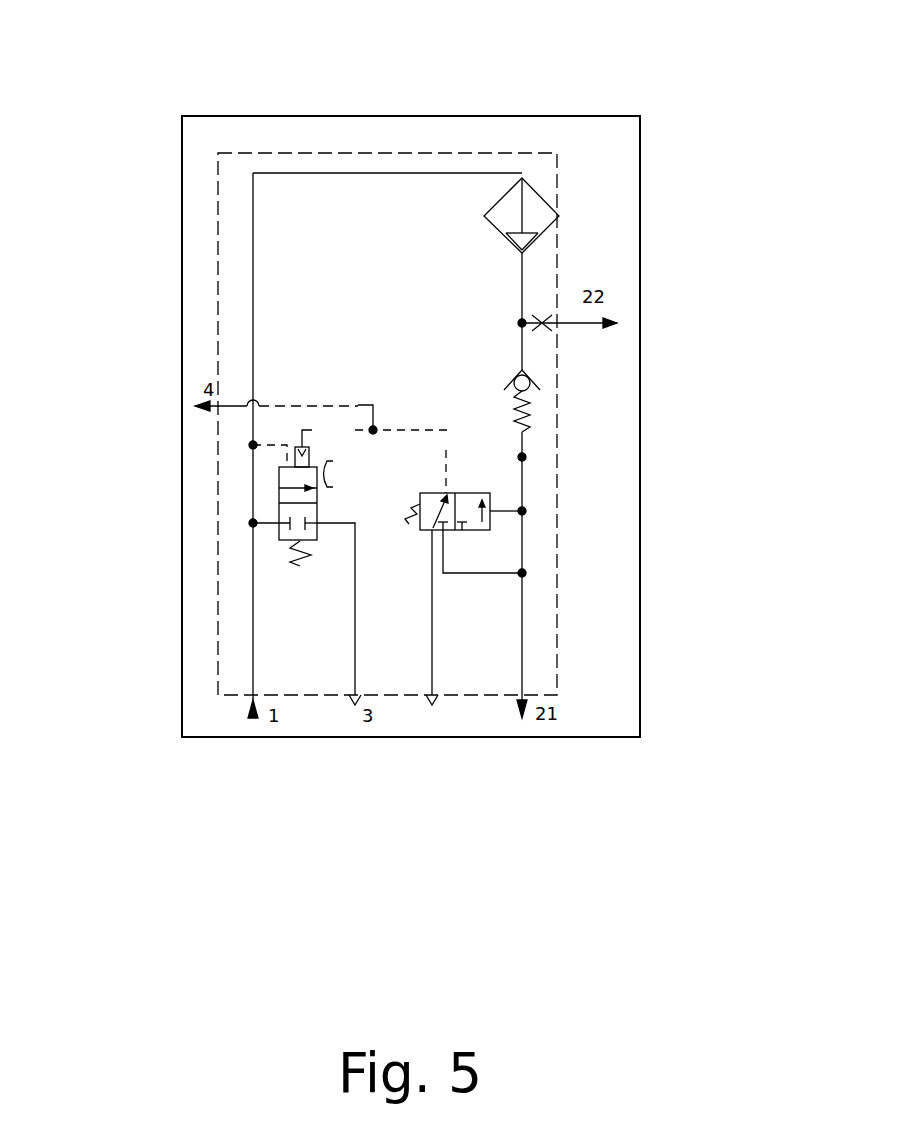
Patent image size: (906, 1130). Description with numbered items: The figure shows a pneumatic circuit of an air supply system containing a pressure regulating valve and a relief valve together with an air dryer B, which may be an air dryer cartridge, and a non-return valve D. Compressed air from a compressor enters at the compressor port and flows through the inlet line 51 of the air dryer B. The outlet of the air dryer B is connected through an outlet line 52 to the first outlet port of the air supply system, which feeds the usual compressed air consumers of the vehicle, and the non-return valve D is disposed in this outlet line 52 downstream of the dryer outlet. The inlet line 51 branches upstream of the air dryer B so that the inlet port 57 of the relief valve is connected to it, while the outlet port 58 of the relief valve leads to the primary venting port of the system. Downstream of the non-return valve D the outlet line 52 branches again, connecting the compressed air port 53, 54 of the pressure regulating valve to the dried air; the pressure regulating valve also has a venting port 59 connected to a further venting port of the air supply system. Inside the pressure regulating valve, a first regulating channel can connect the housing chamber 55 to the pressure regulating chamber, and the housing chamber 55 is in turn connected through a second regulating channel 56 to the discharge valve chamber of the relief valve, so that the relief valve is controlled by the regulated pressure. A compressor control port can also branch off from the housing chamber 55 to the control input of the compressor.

The inlet line 51 is at (375, 185).
The outlet line 52 is at (543, 604).
The compressed air port 53 is at (498, 535).
The compressed air port 54 is at (454, 556).
The housing chamber 55 is at (466, 432).
The second regulating channel 56 is at (315, 428).
The inlet port 57 is at (256, 533).
The outlet port 58 is at (322, 545).
The venting port 59 is at (425, 555).
The air dryer B is at (578, 212).
The non-return valve D is at (558, 397).